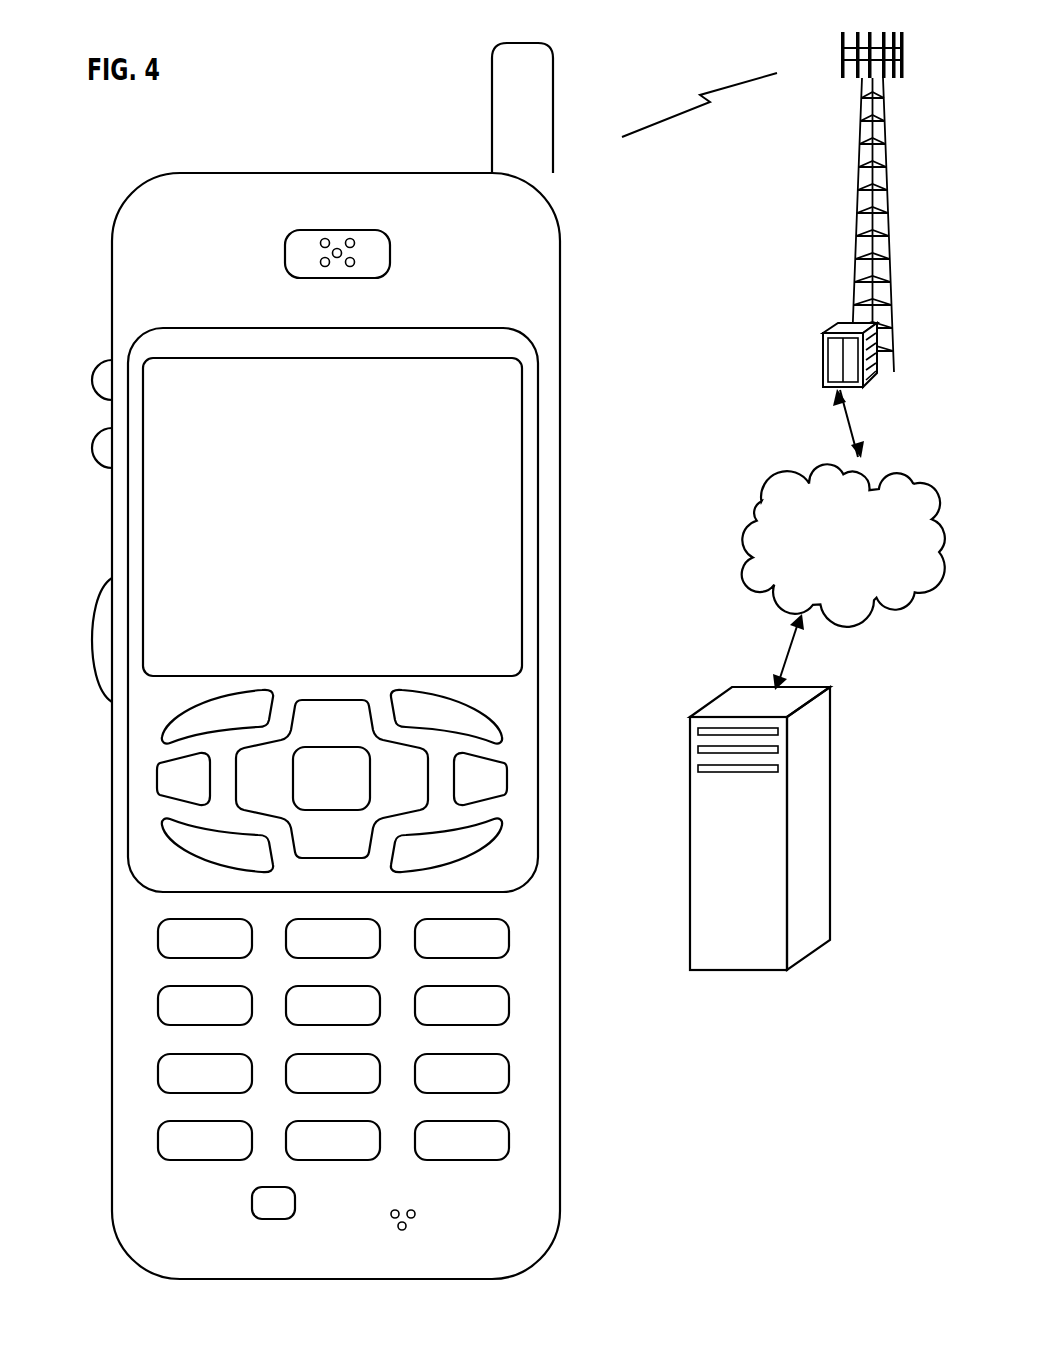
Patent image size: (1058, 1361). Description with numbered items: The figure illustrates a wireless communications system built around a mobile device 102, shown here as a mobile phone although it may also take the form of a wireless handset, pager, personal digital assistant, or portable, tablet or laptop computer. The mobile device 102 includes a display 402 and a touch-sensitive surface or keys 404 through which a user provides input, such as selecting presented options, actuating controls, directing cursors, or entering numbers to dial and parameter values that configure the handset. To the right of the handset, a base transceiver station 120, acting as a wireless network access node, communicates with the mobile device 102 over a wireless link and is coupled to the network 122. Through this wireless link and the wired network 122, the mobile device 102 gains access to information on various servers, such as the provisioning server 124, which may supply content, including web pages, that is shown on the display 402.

The mobile device 102 is at (163, 1279).
The display 402 is at (523, 373).
The keys 404 is at (570, 1166).
The base transceiver station 120 is at (853, 225).
The network 122 is at (763, 592).
The provisioning server 124 is at (738, 972).